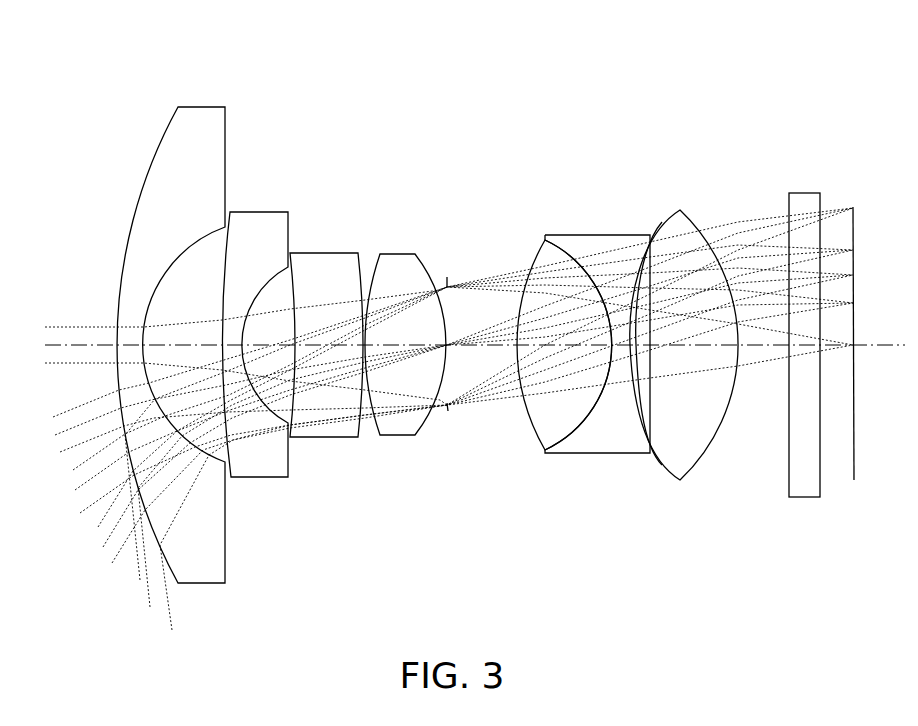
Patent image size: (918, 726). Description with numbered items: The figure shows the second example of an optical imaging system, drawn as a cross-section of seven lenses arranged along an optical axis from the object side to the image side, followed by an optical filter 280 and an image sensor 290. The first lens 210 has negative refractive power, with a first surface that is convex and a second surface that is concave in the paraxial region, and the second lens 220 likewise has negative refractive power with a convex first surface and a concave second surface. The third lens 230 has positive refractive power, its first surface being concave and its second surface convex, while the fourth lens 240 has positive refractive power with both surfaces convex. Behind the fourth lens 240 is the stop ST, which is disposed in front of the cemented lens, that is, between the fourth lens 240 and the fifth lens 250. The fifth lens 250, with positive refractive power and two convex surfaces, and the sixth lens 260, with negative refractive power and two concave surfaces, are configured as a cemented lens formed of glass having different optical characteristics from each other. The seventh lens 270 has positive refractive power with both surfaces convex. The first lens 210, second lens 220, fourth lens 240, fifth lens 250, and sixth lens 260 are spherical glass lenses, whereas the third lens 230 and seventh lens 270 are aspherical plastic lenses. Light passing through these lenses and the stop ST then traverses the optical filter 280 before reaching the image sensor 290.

The first lens 210 is at (197, 107).
The second lens 220 is at (253, 212).
The third lens 230 is at (322, 252).
The fourth lens 240 is at (395, 253).
The fifth lens 250 is at (543, 240).
The sixth lens 260 is at (593, 235).
The seventh lens 270 is at (667, 210).
The optical filter 280 is at (800, 193).
The image sensor 290 is at (855, 238).
The stop ST is at (448, 411).